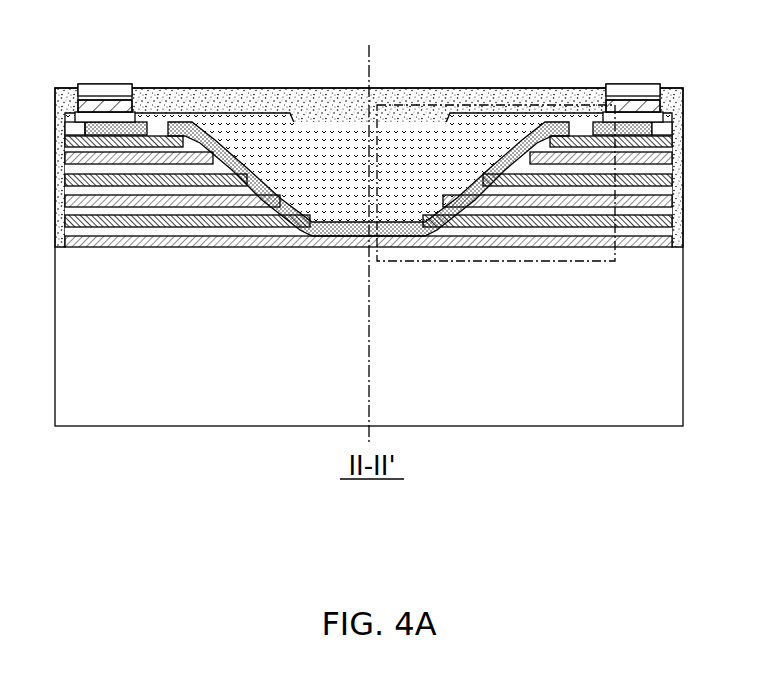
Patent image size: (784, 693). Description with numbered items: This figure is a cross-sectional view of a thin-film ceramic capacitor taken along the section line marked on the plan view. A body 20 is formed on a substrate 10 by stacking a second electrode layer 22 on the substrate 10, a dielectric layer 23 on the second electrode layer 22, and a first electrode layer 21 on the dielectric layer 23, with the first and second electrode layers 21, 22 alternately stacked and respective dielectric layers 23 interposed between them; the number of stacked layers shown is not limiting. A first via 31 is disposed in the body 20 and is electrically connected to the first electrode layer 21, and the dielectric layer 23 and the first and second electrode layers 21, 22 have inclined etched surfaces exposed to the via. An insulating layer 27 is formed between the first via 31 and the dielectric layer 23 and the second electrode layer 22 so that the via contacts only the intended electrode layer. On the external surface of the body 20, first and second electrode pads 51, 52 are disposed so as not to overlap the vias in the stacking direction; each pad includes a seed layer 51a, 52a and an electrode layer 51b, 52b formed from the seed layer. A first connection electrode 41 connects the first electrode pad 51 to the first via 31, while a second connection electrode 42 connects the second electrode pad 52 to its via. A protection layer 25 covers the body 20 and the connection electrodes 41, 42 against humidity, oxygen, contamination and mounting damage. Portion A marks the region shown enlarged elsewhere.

The substrate 10 is at (673, 363).
The body 20 is at (686, 270).
The first electrode layer 21 is at (65, 143).
The second electrode layer 22 is at (65, 162).
The dielectric layer 23 is at (667, 133).
The protection layer 25 is at (415, 90).
The insulating layer 27 is at (503, 147).
The first via 31 is at (320, 140).
The first connection electrode 41 is at (77, 113).
The second connection electrode 42 is at (664, 112).
The first electrode pad 51 is at (105, 60).
The seed layer 51a is at (133, 42).
The electrode layer 51b is at (117, 90).
The second electrode pad 52 is at (635, 60).
The seed layer 52a is at (662, 42).
The electrode layer 52b is at (647, 90).
The portion A is at (558, 262).